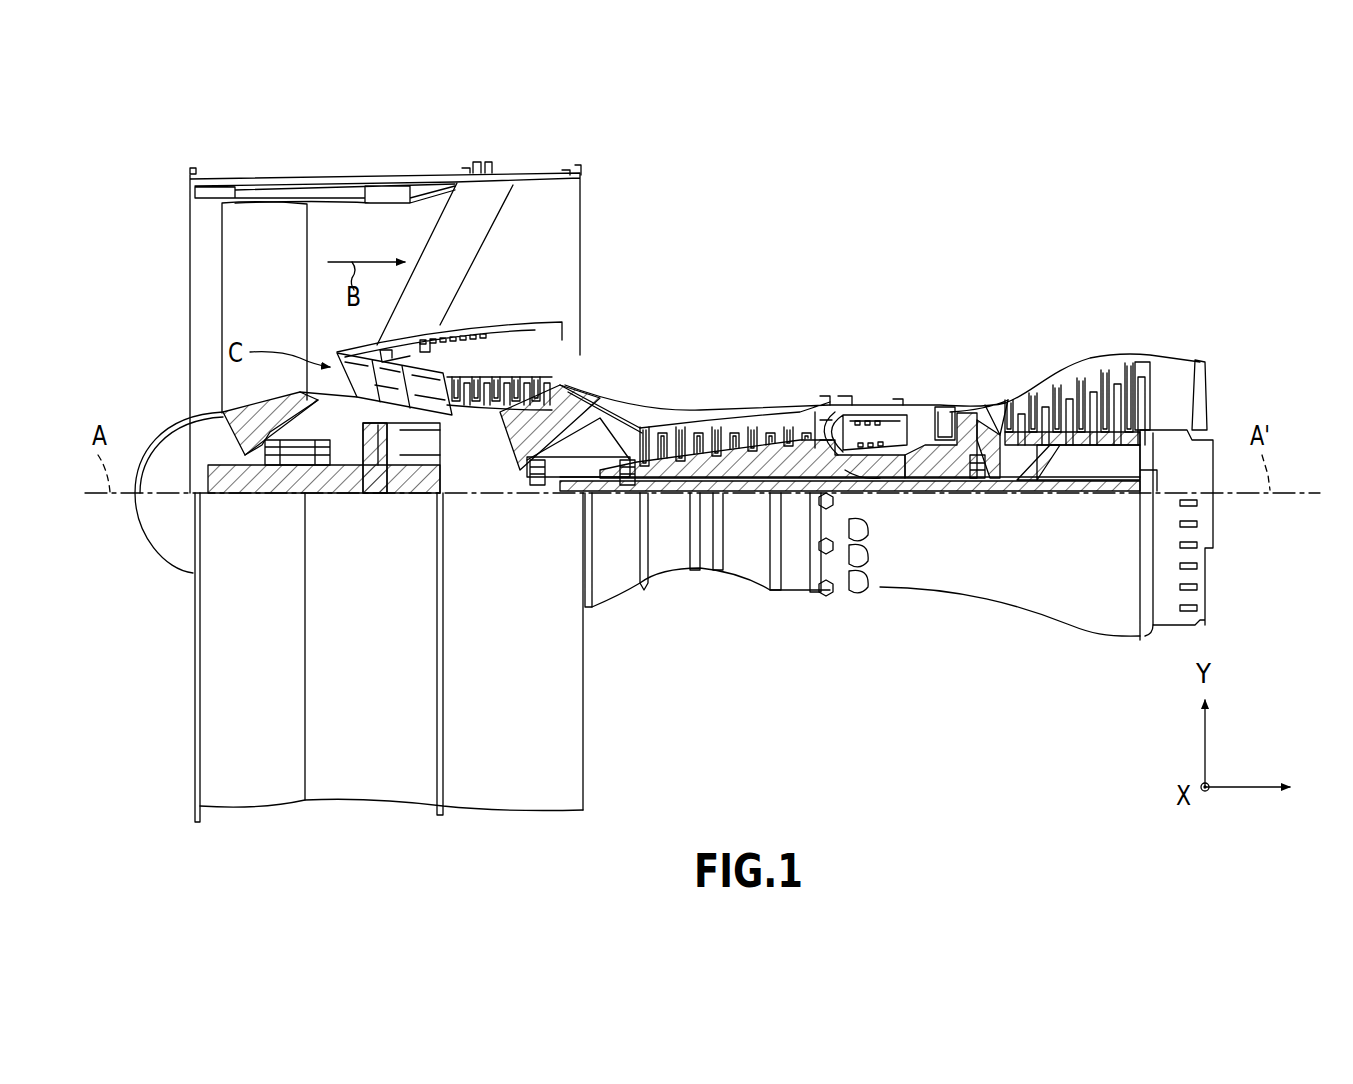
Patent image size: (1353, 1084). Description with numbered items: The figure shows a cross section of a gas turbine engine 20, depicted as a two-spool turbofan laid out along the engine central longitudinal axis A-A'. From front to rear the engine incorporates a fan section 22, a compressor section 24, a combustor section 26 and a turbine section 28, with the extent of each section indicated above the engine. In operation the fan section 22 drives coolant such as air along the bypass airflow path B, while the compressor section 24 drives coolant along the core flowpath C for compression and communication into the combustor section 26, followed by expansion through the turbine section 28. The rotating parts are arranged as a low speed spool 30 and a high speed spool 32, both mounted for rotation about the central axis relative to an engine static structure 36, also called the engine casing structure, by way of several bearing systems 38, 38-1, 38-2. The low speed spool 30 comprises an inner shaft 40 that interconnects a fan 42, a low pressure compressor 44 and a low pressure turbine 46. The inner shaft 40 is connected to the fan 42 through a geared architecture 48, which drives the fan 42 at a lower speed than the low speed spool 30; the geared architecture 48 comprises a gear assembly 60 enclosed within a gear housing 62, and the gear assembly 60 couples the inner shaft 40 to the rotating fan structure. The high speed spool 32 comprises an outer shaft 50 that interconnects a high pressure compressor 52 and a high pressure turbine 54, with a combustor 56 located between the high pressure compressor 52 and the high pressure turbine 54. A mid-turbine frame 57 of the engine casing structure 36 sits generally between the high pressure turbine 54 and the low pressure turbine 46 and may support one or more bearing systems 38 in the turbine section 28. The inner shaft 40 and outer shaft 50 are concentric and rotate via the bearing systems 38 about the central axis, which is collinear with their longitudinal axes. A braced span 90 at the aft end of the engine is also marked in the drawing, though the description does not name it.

The gas turbine engine 20 is at (915, 215).
The fan section 22 is at (431, 158).
The compressor section 24 is at (440, 292).
The combustor section 26 is at (926, 292).
The turbine section 28 is at (1141, 292).
The low speed spool 30 is at (752, 500).
The high speed spool 32 is at (805, 445).
The engine static structure 36 is at (897, 565).
The bearing system 38 is at (992, 455).
The bearing system 38-1 is at (272, 470).
The bearing system 38-2 is at (540, 493).
The inner shaft 40 is at (605, 493).
The fan 42 is at (277, 304).
The low pressure compressor 44 is at (520, 381).
The low pressure turbine 46 is at (1073, 375).
The geared architecture 48 is at (388, 535).
The outer shaft 50 is at (878, 462).
The high pressure compressor 52 is at (748, 420).
The high pressure turbine 54 is at (938, 405).
The combustor 56 is at (880, 420).
The mid-turbine frame 57 is at (990, 420).
The gear assembly 60 is at (420, 455).
The gear housing 62 is at (420, 437).
The exhaust section 90 is at (1141, 676).